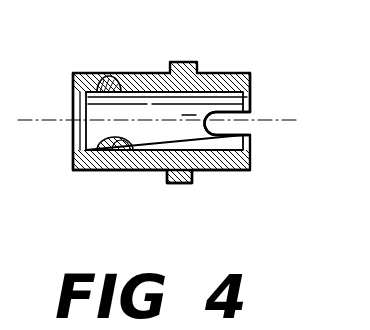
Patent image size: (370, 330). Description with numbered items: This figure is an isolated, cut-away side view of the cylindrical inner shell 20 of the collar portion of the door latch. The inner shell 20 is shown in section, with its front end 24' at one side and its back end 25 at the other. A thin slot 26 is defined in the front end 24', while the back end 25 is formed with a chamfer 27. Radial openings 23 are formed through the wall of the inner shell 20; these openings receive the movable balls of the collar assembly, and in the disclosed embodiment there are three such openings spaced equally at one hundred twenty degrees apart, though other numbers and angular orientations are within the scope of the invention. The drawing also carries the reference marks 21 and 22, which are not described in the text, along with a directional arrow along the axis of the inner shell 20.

The inner shell 20 is at (212, 188).
The flow direction arrow 21 is at (101, 112).
The flange 22 is at (178, 185).
The radial openings 23 is at (114, 82).
The front end 24' is at (283, 75).
The back end 25 is at (73, 77).
The thin slot 26 is at (244, 132).
The chamfer 27 is at (73, 150).